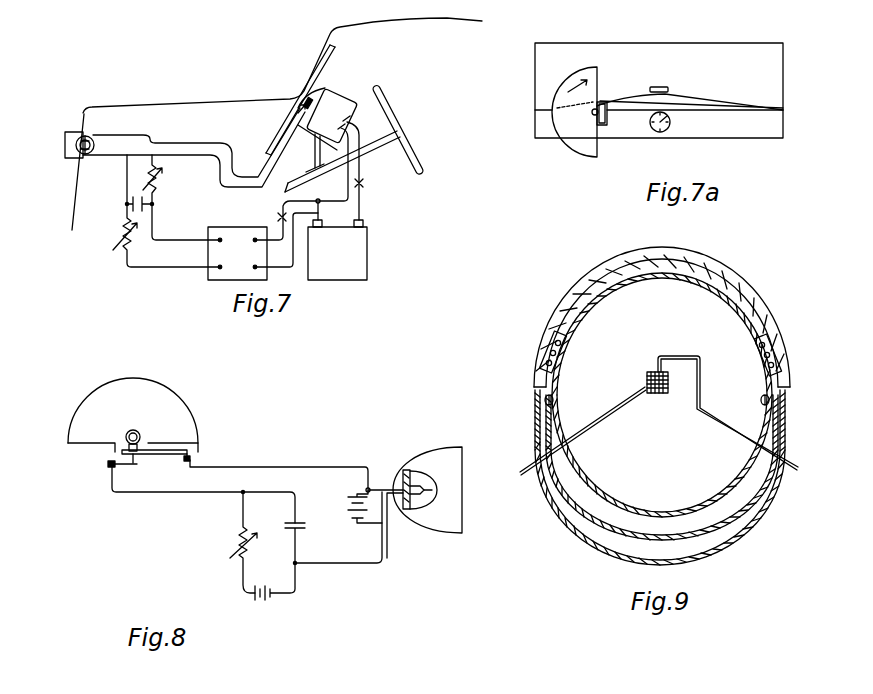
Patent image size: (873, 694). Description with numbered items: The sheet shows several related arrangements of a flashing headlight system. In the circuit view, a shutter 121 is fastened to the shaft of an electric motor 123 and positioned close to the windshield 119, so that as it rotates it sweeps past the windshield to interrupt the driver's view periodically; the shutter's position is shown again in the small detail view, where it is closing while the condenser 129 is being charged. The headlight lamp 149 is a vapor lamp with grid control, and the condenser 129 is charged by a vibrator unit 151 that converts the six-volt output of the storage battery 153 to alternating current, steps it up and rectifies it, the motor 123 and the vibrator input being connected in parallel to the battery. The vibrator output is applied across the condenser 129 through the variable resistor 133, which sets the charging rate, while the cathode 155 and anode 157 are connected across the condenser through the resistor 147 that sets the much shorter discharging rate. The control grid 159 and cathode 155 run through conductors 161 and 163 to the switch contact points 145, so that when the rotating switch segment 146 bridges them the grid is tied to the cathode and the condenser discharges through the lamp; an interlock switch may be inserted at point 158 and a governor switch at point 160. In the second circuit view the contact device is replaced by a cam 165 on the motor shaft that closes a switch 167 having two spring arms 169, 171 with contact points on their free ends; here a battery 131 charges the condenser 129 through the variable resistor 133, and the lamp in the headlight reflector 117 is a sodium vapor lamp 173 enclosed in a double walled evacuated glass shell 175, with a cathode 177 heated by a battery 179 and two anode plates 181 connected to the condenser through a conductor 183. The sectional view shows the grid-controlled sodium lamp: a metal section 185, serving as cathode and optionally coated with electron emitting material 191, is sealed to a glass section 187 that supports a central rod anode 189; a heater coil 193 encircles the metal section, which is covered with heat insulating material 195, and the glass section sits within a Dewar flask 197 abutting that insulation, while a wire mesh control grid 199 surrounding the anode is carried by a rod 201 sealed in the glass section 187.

In FIG. 7, the headlight reflector 117 is at (81, 154).
In FIG. 8, the headlight reflector 117 is at (437, 533).
In FIG. 7, the windshield 119 is at (310, 72).
In FIG. 7, the shutter 121 is at (300, 107).
In FIG. 7A, the shutter 121 is at (582, 132).
In FIG. 8, the shutter 121 is at (146, 388).
In FIG. 7, the electric motor 123 is at (337, 100).
In FIG. 7, the condenser 129 is at (146, 208).
In FIG. 8, the condenser 129 is at (305, 527).
In FIG. 8, the battery 131 is at (273, 605).
In FIG. 7, the variable resistor 133 is at (120, 252).
In FIG. 8, the variable resistor 133 is at (232, 538).
In FIG. 7, the switch contact points 145 is at (301, 109).
In FIG. 7, the switch segment 146 is at (311, 100).
In FIG. 7A, the switch segment 146 is at (592, 113).
In FIG. 7, the resistor 147 is at (158, 181).
In FIG. 7, the headlight lamp 149 is at (82, 137).
In FIG. 7, the vibrator unit 151 is at (226, 261).
In FIG. 7, the storage battery 153 is at (349, 261).
In FIG. 7, the cathode 155 is at (79, 149).
In FIG. 7, the anode 157 is at (86, 132).
In FIG. 7, the point 158 is at (364, 184).
In FIG. 7, the control grid 159 is at (79, 145).
In FIG. 7, the point 160 is at (279, 216).
In FIG. 7, the conductor 161 is at (183, 143).
In FIG. 7, the conductor 163 is at (177, 157).
In FIG. 8, the cam 165 is at (139, 430).
In FIG. 8, the switch 167 is at (171, 477).
In FIG. 8, the spring arm 169 is at (188, 452).
In FIG. 8, the spring arm 171 is at (125, 467).
In FIG. 8, the sodium vapor lamp 173 is at (431, 493).
In FIG. 8, the double walled evacuated glass shell 175 is at (433, 480).
In FIG. 8, the cathode 177 is at (424, 490).
In FIG. 8, the battery 179 is at (347, 507).
In FIG. 8, the anode plates 181 is at (417, 471).
In FIG. 8, the conductor 183 is at (347, 565).
In FIG. 9, the metal section 185 is at (602, 303).
In FIG. 9, the glass section 187 is at (610, 497).
In FIG. 9, the anode 189 is at (655, 365).
In FIG. 9, the electron emitting material 191 is at (751, 360).
In FIG. 9, the heater coil 193 is at (546, 340).
In FIG. 9, the heat insulating material 195 is at (587, 292).
In FIG. 9, the double-walled evacuated glass shell 197 is at (717, 552).
In FIG. 9, the control grid 199 is at (657, 394).
In FIG. 9, the rod 201 is at (617, 410).